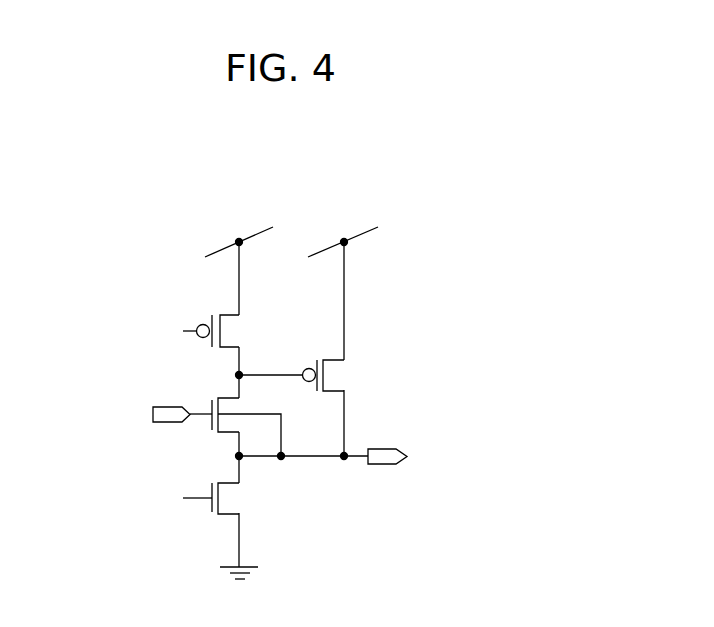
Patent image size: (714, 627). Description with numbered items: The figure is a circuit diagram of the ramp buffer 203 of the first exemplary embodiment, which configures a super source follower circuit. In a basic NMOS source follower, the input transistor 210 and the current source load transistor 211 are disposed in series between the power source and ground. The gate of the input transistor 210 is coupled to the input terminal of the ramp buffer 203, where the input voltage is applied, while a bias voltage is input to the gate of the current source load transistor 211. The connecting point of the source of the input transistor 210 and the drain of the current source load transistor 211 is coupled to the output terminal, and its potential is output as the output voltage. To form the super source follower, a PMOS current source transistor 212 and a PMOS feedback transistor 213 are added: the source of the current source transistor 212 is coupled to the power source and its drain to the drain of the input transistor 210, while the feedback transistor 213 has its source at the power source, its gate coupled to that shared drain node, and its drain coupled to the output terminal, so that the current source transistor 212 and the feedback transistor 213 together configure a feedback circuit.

The ramp buffer 203 is at (466, 164).
The input transistor 210 is at (212, 438).
The current source load transistor 211 is at (215, 517).
The current source transistor 212 is at (200, 322).
The feedback transistor 213 is at (343, 373).